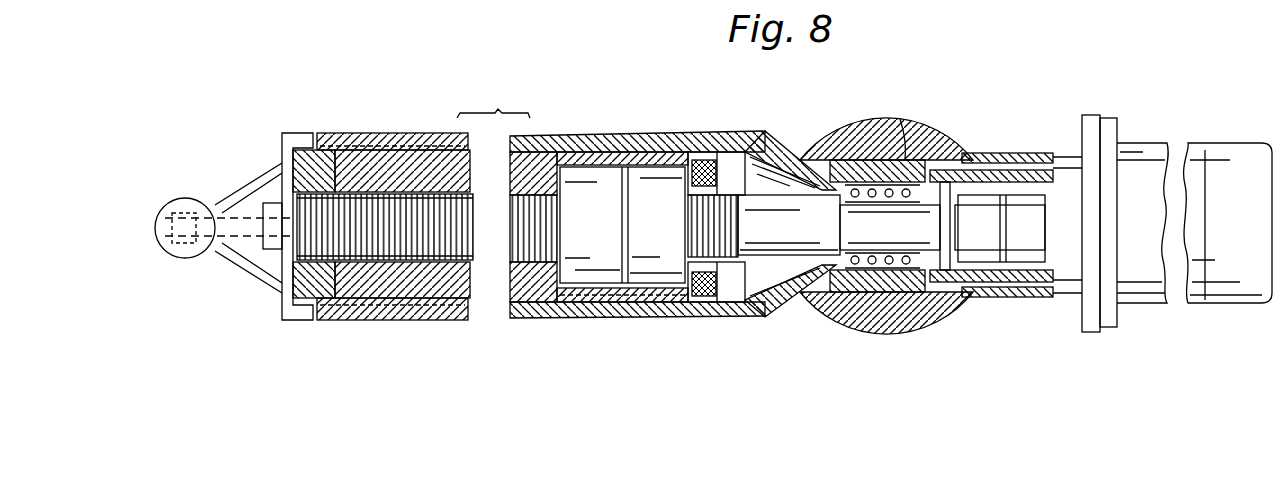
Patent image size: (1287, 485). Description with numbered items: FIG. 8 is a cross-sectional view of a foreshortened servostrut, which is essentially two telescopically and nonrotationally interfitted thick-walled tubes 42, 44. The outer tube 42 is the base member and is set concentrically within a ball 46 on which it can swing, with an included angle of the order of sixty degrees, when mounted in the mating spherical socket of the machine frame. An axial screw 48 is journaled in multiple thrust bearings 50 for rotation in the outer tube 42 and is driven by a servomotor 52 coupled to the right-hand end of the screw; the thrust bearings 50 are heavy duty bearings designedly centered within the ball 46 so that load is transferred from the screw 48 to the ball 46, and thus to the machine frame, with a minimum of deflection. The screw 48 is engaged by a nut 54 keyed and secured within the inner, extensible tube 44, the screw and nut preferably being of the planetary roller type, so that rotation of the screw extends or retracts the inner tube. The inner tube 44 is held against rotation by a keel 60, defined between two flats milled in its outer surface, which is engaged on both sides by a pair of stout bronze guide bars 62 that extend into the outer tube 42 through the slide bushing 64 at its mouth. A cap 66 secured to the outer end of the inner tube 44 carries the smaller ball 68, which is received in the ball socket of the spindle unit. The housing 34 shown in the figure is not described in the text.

The housing tube 34 is at (663, 132).
The outer tube 42 is at (782, 150).
The inner tube 44 is at (547, 136).
The ball 46 is at (933, 138).
The axial screw 48 is at (768, 240).
The thrust bearings 50 is at (903, 123).
The servomotor 52 is at (1121, 227).
The nut 54 is at (639, 235).
The keel 60 is at (587, 298).
The guide bars 62 is at (403, 320).
The slide bushing 64 is at (397, 133).
The cap 66 is at (300, 133).
The smaller ball 68 is at (193, 200).